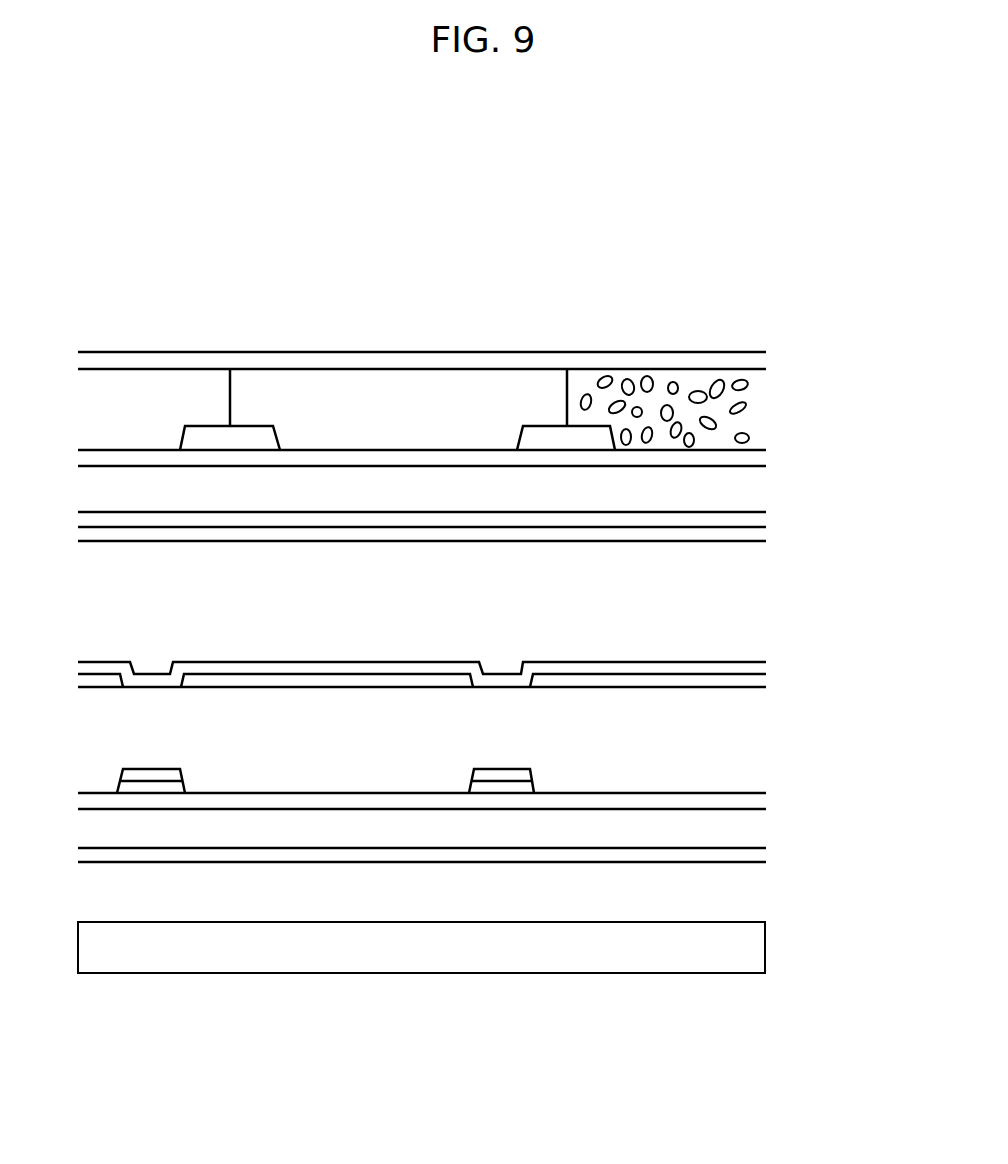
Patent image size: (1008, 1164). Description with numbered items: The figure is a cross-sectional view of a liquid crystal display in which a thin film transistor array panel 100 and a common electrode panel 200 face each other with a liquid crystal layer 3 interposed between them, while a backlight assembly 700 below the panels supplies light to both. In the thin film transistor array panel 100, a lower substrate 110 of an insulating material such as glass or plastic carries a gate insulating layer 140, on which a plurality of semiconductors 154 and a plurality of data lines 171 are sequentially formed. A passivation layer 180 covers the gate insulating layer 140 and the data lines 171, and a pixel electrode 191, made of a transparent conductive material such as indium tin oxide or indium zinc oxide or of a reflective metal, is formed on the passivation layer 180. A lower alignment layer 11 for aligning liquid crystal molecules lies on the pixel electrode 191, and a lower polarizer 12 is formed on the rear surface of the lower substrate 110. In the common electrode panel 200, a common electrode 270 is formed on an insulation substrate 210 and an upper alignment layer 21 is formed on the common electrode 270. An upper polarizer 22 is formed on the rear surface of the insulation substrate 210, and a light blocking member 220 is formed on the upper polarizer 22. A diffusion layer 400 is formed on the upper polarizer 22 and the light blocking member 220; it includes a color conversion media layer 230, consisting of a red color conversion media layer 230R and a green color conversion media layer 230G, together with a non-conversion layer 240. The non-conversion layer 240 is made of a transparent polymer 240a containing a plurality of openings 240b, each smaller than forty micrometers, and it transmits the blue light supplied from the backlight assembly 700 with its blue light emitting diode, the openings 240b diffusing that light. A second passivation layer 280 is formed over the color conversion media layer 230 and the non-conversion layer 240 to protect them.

The diffusion layer 400 is at (678, 222).
The color conversion media layer 230 is at (339, 264).
The red color conversion media layer 230R is at (123, 402).
The green color conversion media layer 230G is at (310, 398).
The non-conversion layer 240 is at (717, 264).
The transparent polymer 240a is at (692, 380).
The openings 240b is at (645, 382).
The light blocking member 220 is at (263, 440).
The second passivation layer 280 is at (752, 362).
The upper polarizer 22 is at (752, 457).
The insulation substrate 210 is at (752, 490).
The common electrode 270 is at (752, 520).
The upper alignment layer 21 is at (755, 540).
The common electrode panel 200 is at (831, 355).
The liquid crystal layer 3 is at (752, 598).
The lower alignment layer 11 is at (755, 667).
The pixel electrode 191 is at (755, 680).
The passivation layer 180 is at (752, 745).
The gate insulating layer 140 is at (752, 801).
The lower substrate 110 is at (752, 829).
The lower polarizer 12 is at (752, 856).
The semiconductors 154 is at (132, 787).
The data lines 171 is at (165, 775).
The thin film transistor array panel 100 is at (831, 648).
The backlight assembly 700 is at (757, 947).